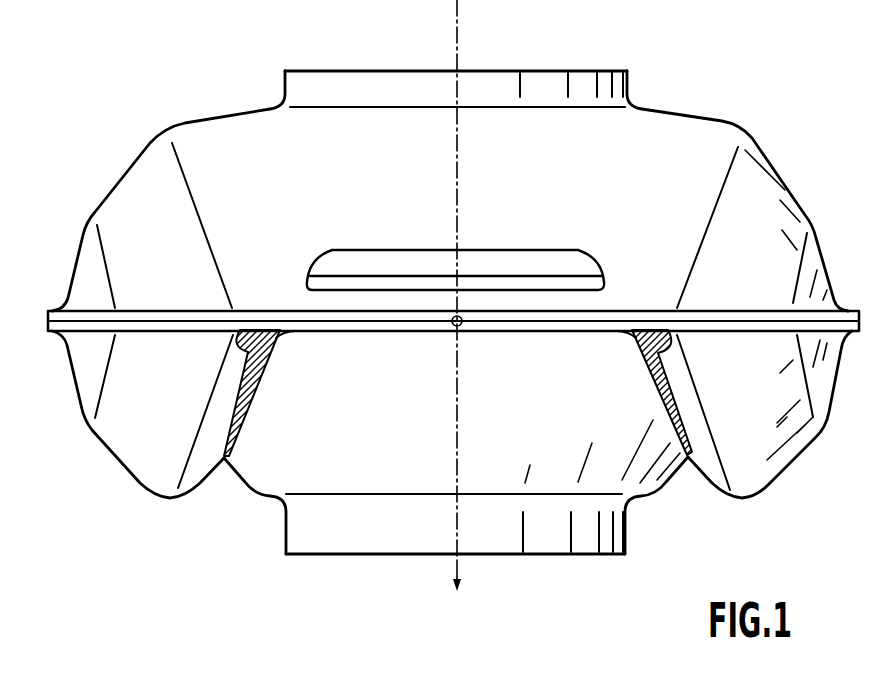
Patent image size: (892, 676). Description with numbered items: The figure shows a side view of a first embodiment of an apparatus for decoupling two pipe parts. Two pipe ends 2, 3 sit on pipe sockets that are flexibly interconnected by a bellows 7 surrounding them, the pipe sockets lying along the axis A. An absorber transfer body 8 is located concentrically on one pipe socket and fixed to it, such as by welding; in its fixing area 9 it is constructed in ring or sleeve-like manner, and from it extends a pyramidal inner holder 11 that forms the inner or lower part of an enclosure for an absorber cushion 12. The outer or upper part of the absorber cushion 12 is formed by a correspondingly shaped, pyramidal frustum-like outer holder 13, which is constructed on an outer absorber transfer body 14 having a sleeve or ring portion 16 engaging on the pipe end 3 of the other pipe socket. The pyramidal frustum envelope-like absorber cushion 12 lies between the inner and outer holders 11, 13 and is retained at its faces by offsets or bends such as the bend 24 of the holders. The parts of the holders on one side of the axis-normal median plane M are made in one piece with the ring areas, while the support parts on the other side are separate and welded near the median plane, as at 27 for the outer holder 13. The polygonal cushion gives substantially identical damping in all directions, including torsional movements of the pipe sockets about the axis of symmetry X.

The pipe end 2 is at (510, 558).
The pipe end 3 is at (585, 70).
The bellows 7 is at (390, 125).
The absorber transfer body 8 is at (408, 482).
The fixing area 9 is at (627, 530).
The inner holder 11 is at (660, 400).
The absorber cushion 12 is at (257, 385).
The outer holder 13 is at (135, 167).
The outer absorber transfer body 14 is at (790, 187).
The sleeve or ring portion 16 is at (628, 82).
The offset or bend 24 is at (193, 493).
The weld 27 is at (851, 334).
The axis A is at (458, 19).
The axis of symmetry X is at (457, 590).
The center point Z is at (447, 330).
The median plane M is at (85, 310).